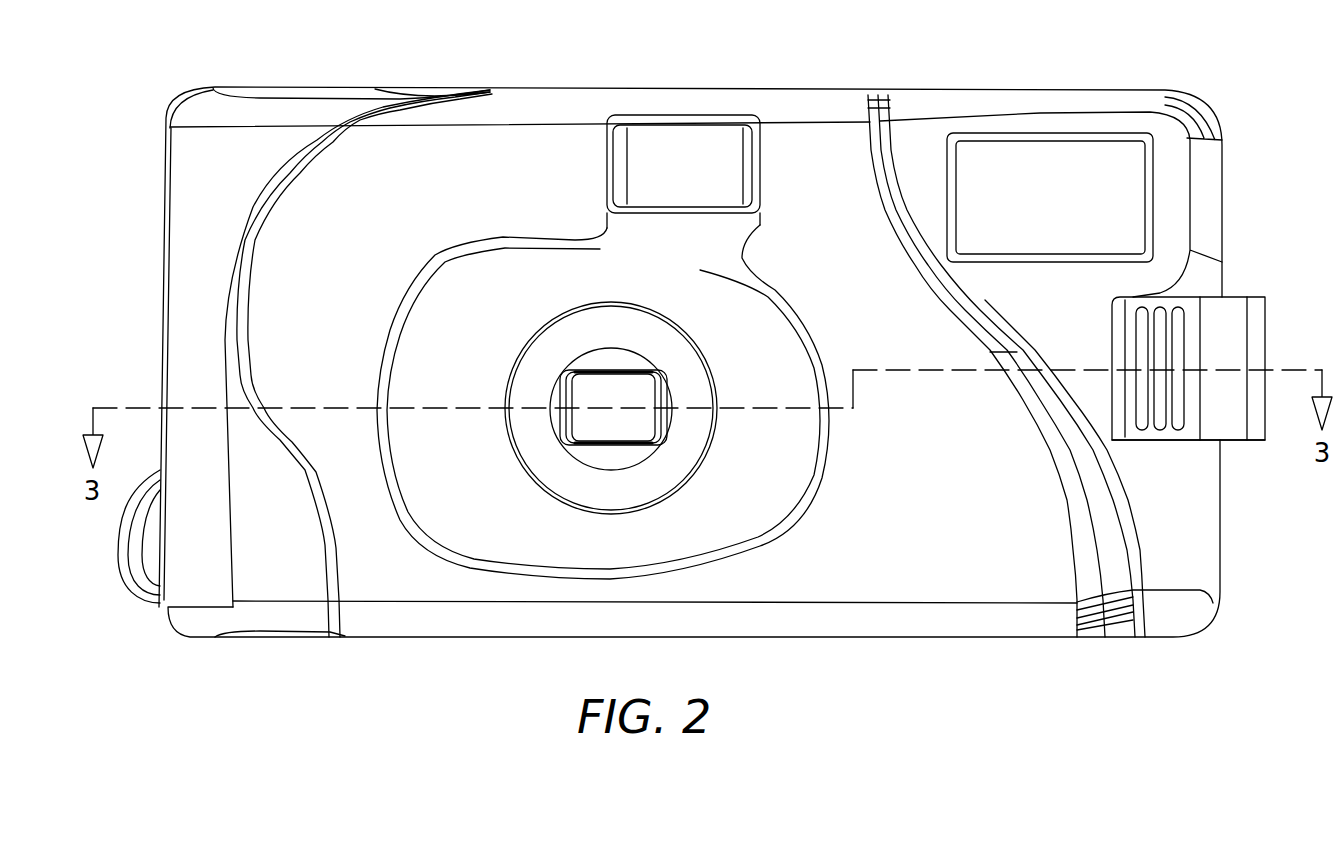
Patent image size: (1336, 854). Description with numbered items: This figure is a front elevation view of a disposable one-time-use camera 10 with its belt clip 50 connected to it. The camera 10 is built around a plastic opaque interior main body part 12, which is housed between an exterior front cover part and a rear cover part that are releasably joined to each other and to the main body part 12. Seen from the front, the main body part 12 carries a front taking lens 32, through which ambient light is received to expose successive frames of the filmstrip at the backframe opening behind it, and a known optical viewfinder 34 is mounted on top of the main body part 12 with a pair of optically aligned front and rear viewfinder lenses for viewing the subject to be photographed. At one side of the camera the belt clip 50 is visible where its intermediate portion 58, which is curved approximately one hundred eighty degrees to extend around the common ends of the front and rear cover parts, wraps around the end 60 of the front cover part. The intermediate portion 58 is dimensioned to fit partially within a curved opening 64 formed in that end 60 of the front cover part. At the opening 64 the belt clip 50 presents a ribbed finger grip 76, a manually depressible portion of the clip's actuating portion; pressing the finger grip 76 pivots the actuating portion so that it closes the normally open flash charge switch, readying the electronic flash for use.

The disposable one-time-use camera 10 is at (145, 104).
The interior main body part 12 is at (183, 240).
The front taking lens 32 is at (587, 423).
The optical viewfinder 34 is at (643, 160).
The belt clip 50 is at (1243, 445).
The intermediate portion 58 is at (1267, 323).
The end of the front cover part 60 is at (1197, 552).
The curved opening 64 is at (1177, 440).
The ribbed finger grip 76 is at (1143, 337).